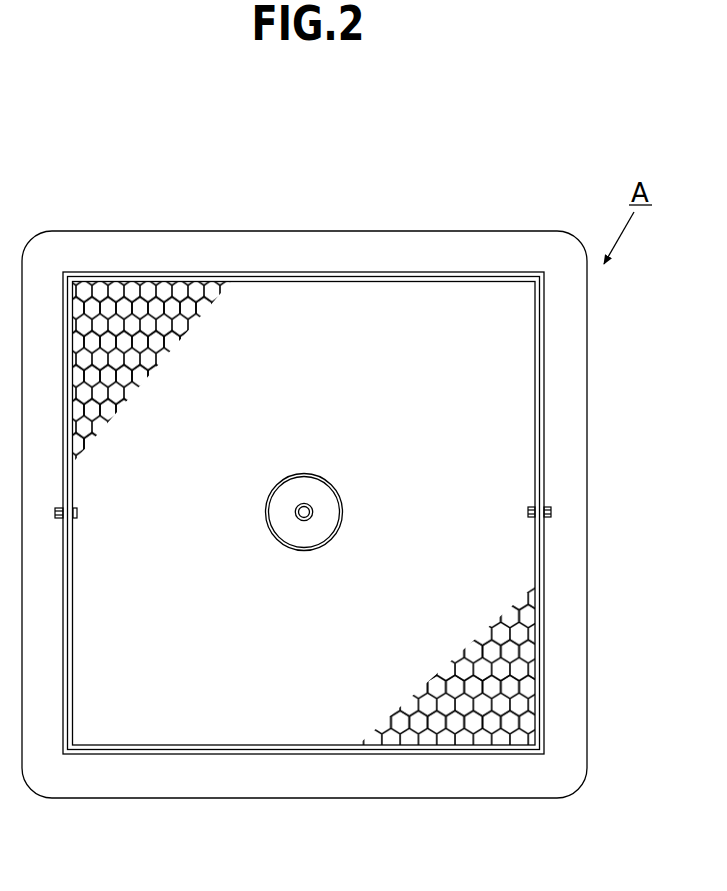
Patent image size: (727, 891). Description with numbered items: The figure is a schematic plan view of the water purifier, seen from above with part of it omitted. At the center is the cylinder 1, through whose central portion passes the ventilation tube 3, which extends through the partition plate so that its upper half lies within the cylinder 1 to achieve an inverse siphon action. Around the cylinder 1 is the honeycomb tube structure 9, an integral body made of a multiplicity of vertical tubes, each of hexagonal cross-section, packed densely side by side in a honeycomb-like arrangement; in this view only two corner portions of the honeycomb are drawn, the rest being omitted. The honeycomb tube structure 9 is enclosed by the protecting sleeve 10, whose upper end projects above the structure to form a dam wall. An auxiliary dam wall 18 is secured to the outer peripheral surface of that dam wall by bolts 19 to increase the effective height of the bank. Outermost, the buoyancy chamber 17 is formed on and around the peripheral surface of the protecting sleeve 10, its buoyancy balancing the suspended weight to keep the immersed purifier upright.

The cylinder 1 is at (275, 542).
The ventilation tube 3 is at (300, 522).
The honeycomb tube structure 9 is at (520, 662).
The protecting sleeve 10 is at (540, 571).
The buoyancy chamber 17 is at (478, 782).
The auxiliary dam wall 18 is at (540, 390).
The bolts 19 is at (553, 511).